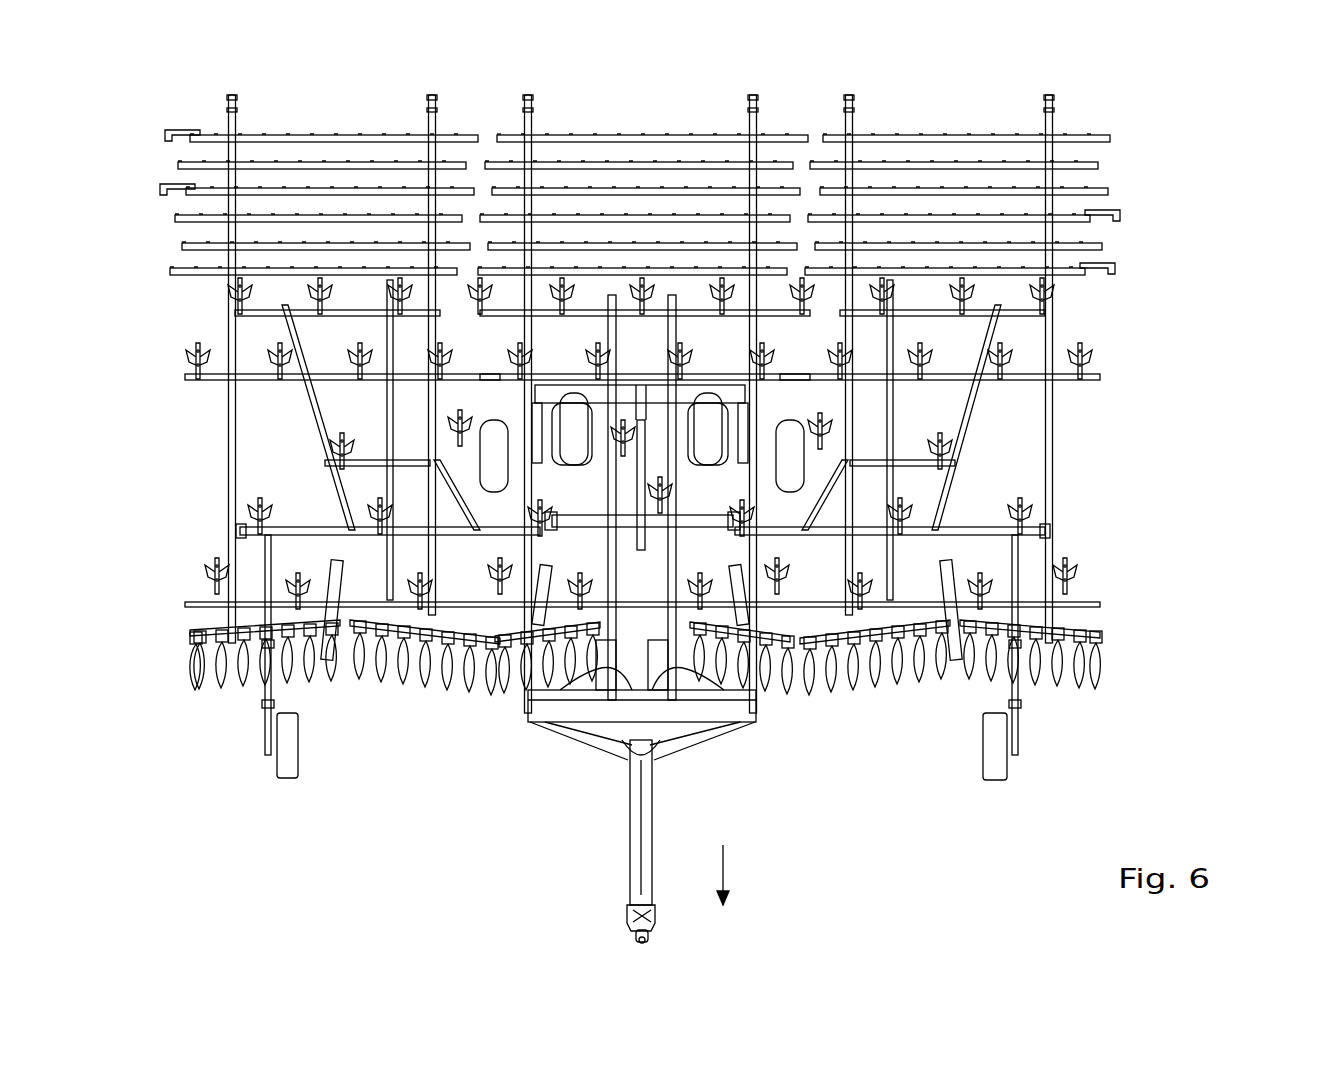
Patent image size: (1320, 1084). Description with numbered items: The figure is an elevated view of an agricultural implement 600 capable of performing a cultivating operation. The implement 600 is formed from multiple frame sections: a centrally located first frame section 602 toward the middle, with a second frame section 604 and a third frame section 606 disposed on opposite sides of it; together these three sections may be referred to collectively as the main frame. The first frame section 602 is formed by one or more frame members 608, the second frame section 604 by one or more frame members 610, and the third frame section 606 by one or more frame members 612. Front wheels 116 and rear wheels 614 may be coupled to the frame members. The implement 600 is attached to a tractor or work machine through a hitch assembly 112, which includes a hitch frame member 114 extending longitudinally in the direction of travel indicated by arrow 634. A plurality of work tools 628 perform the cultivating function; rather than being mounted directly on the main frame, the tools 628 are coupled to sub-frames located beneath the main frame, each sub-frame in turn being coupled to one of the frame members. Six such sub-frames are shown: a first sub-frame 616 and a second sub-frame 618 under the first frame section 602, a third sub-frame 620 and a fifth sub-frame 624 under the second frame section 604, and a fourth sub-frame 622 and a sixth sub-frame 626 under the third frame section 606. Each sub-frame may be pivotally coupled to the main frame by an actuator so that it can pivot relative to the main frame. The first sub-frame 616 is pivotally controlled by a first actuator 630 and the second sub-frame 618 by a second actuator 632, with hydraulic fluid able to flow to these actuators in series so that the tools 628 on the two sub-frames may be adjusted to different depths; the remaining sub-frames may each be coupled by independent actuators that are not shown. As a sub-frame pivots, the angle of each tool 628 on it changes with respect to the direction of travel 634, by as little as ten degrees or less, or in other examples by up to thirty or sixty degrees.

The agricultural implement 600 is at (1198, 142).
The first frame section 602 is at (632, 115).
The second frame section 604 is at (322, 118).
The third frame section 606 is at (943, 115).
The frame members 608 is at (768, 690).
The frame members 610 is at (245, 550).
The frame members 612 is at (1015, 555).
The rear wheels 614 is at (560, 420).
The first sub-frame 616 is at (700, 695).
The second sub-frame 618 is at (590, 690).
The third sub-frame 620 is at (378, 640).
The fourth sub-frame 622 is at (903, 635).
The fifth sub-frame 624 is at (255, 633).
The sub-frame 626 is at (1025, 633).
The work tools 628 is at (225, 675).
The first actuator 630 is at (785, 675).
The second actuator 632 is at (490, 685).
The direction of travel 634 is at (723, 870).
The hitch assembly 112 is at (655, 937).
The hitch frame member 114 is at (630, 845).
The front wheels 116 is at (287, 758).